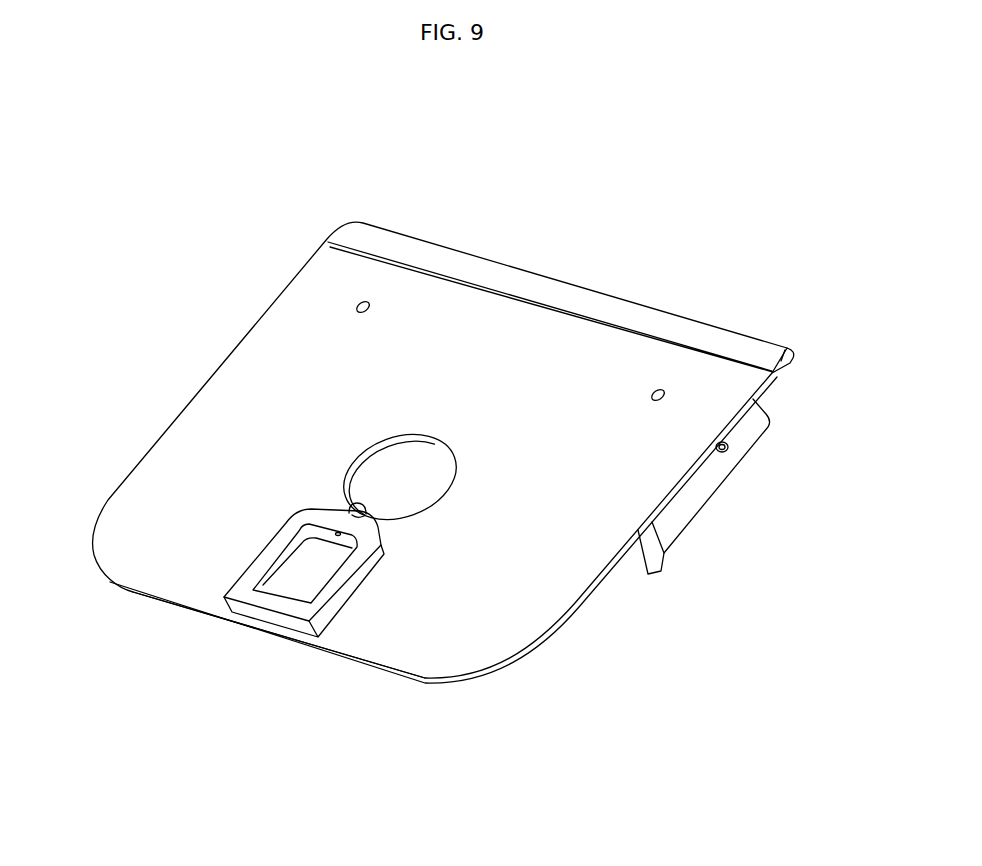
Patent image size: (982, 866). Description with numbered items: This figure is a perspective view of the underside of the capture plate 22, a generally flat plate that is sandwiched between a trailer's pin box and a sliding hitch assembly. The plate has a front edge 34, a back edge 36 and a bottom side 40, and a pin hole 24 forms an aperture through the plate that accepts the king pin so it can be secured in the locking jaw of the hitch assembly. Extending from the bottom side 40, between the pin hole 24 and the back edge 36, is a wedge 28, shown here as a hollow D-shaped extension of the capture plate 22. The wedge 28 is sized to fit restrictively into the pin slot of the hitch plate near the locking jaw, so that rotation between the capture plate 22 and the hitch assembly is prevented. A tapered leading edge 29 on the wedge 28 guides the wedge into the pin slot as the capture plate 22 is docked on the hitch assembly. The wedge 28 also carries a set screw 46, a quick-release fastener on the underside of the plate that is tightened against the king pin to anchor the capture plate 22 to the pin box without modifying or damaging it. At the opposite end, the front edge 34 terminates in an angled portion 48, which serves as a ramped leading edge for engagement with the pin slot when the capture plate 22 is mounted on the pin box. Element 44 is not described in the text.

The capture plate 22 is at (421, 449).
The pin hole 24 is at (383, 477).
The wedge 28 is at (302, 606).
The tapered leading edge 29 is at (385, 547).
The front edge 34 is at (722, 329).
The back edge 36 is at (122, 603).
The bottom side 40 is at (452, 622).
The mounting bracket 44 is at (663, 558).
The set screw 46 is at (380, 519).
The angled portion 48 is at (418, 248).